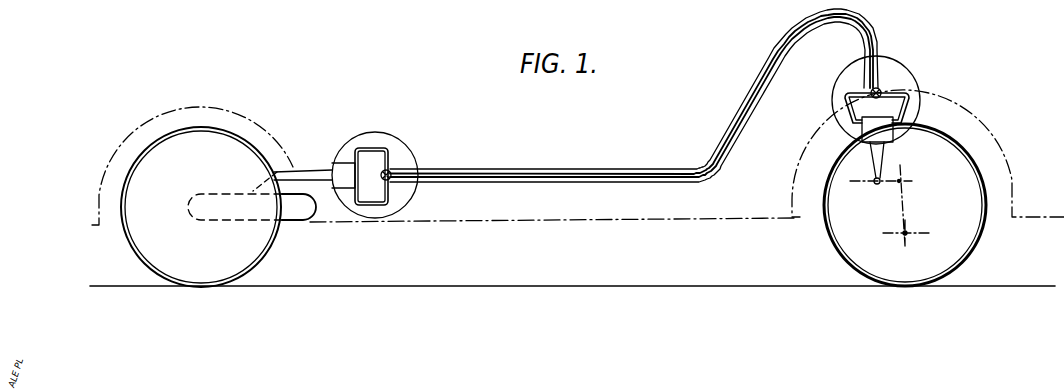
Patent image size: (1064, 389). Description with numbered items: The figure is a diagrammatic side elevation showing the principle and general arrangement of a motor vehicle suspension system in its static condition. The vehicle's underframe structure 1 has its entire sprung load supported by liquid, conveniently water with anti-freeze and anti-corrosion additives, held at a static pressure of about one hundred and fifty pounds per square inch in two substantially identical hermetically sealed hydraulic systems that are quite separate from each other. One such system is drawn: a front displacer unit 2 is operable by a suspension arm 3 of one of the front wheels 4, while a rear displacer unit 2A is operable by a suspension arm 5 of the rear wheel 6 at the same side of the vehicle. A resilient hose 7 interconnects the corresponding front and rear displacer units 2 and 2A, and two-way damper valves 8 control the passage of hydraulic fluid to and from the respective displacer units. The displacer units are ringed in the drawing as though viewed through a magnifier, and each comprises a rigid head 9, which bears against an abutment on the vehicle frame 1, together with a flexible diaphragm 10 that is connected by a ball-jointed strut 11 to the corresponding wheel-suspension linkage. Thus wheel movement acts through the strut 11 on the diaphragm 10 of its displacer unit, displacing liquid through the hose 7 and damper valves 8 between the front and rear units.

The underframe structure 1 is at (637, 220).
The front displacer unit 2 is at (910, 102).
The rear displacer unit 2A is at (373, 148).
The suspension arm 3 is at (895, 184).
The front wheel 4 is at (990, 202).
The suspension arm 5 is at (294, 213).
The rear wheel 6 is at (143, 156).
The resilient hose 7 is at (640, 169).
The two-way damper valve 8 is at (390, 172).
The rigid head 9 is at (388, 197).
The flexible diaphragm 10 is at (353, 152).
The ball-jointed strut 11 is at (312, 168).